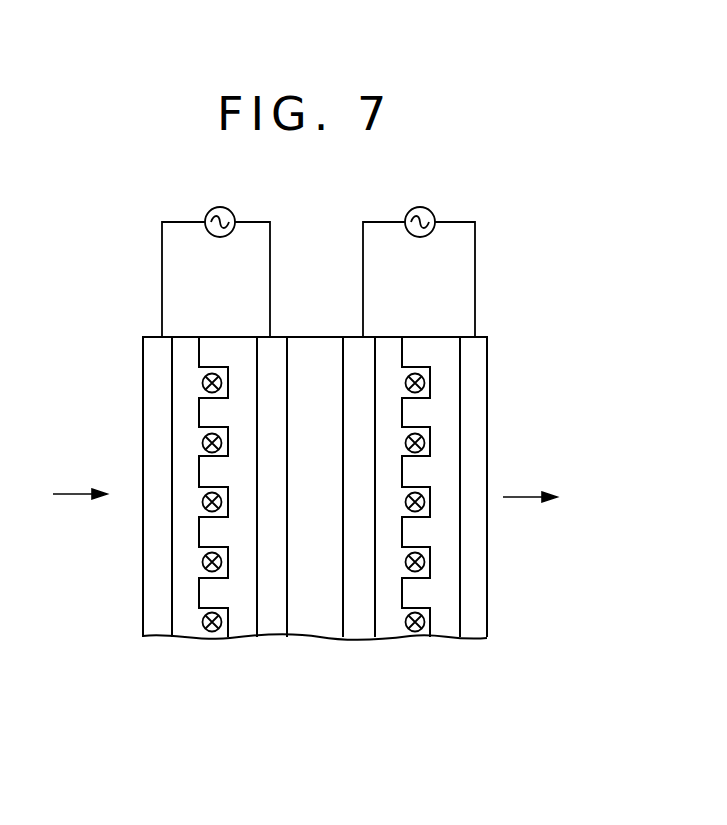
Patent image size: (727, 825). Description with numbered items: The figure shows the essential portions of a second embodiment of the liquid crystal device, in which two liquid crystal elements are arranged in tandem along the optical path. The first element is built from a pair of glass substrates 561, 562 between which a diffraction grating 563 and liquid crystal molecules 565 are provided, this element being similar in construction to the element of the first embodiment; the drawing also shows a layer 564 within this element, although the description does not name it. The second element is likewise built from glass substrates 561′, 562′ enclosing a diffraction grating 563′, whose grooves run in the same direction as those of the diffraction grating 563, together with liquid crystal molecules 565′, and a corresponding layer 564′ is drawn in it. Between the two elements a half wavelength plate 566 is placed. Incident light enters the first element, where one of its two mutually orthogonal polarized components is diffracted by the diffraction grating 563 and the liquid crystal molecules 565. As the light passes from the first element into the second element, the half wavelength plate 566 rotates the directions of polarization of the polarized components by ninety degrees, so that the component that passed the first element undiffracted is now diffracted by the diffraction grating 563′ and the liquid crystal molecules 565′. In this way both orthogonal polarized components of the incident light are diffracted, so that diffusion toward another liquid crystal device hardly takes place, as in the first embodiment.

The glass substrate 561 is at (143, 590).
The glass substrate 562 is at (282, 637).
The diffraction grating 563 is at (247, 637).
The insulating layer 564 is at (177, 638).
The liquid crystal molecules 565 is at (210, 637).
The half wavelength plate 566 is at (311, 337).
The glass substrate 561′ is at (358, 637).
The glass substrate 562′ is at (487, 597).
The diffraction grating 563′ is at (452, 640).
The second insulating layer 564′ is at (400, 640).
The liquid crystal molecules 565′ is at (415, 637).